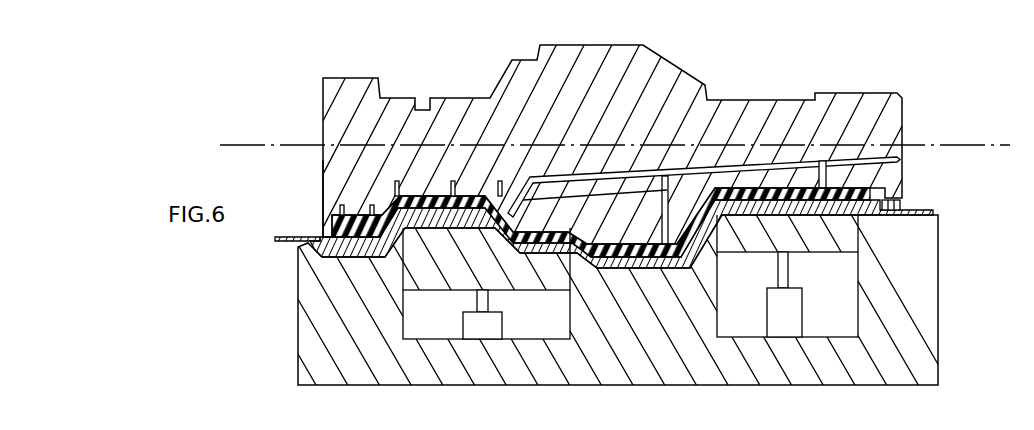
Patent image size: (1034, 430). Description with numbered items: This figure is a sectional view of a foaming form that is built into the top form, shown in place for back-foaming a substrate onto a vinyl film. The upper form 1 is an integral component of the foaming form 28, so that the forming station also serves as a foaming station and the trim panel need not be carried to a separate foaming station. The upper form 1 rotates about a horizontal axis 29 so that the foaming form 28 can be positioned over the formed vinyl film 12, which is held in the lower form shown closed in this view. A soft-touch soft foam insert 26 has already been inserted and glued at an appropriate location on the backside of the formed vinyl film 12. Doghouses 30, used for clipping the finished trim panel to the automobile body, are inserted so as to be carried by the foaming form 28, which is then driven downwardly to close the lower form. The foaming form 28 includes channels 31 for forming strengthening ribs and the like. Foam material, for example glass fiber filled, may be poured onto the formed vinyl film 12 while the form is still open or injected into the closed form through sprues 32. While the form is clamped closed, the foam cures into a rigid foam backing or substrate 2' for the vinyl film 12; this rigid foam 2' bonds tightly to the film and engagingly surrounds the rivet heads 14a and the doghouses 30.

The upper form 1 is at (347, 92).
The rigid foam backing or substrate 2' is at (595, 110).
The formed vinyl film 12 is at (922, 208).
The rivet heads 14a is at (486, 283).
The soft foam insert 26 is at (310, 245).
The foaming form 28 is at (332, 180).
The horizontal axis 29 is at (237, 144).
The doghouses 30 is at (326, 222).
The channels 31 is at (338, 212).
The sprues 32 is at (900, 165).